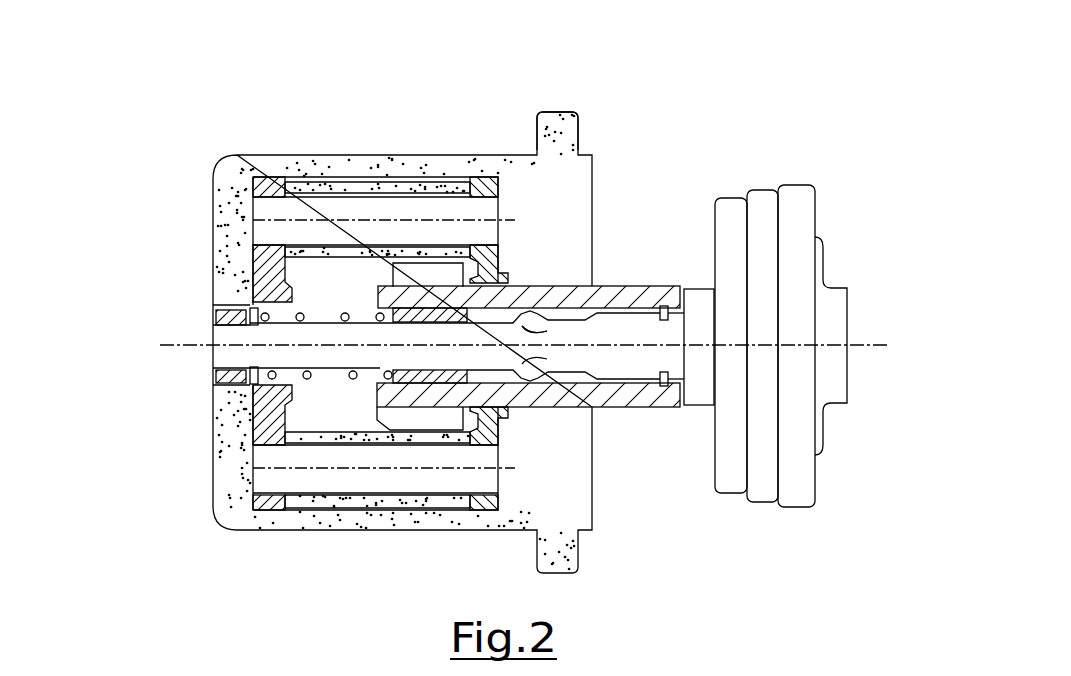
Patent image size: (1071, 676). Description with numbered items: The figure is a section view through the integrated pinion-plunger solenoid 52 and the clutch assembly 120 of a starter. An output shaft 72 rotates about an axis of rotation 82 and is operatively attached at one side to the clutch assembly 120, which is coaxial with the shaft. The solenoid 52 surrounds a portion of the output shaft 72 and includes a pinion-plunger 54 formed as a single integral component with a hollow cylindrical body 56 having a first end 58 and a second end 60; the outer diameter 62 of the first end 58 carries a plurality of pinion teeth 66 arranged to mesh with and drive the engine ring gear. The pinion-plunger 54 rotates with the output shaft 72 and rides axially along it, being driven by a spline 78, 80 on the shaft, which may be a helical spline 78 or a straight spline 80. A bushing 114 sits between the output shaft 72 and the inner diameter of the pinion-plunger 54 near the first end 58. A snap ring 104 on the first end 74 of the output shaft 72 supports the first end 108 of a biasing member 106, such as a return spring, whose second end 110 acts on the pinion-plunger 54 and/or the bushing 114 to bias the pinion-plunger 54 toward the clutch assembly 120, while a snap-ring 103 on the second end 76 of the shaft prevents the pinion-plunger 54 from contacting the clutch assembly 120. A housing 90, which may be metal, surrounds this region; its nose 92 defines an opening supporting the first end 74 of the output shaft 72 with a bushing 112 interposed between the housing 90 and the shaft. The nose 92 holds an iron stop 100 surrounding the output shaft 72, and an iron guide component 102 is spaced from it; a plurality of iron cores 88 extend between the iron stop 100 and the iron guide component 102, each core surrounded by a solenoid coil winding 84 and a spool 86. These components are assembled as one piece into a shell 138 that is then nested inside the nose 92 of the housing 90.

The integrated pinion-plunger solenoid 52 is at (600, 90).
The pinion-plunger 54 is at (582, 293).
The hollow cylindrical body 56 is at (627, 293).
The first end 58 is at (371, 281).
The second end 60 is at (644, 422).
The outer diameter 62 is at (442, 408).
The pinion teeth 66 is at (412, 418).
The output shaft 72 is at (289, 311).
The first end 74 is at (248, 377).
The second end 76 is at (681, 280).
The helical spline 78 is at (548, 331).
The straight spline 80 is at (534, 329).
The axis of rotation 82 is at (873, 345).
The solenoid coil winding 84 is at (340, 183).
The spool 86 is at (290, 183).
The iron cores 88 is at (418, 200).
The housing 90 is at (227, 242).
The nose 92 is at (205, 509).
The iron stop 100 is at (278, 283).
The iron guide component 102 is at (483, 505).
The snap-ring 103 is at (667, 386).
The snap ring 104 is at (250, 380).
The biasing member 106 is at (284, 292).
The first end 108 is at (256, 332).
The second end 110 is at (389, 297).
The bushing 112 is at (206, 370).
The bushing 114 is at (408, 370).
The clutch assembly 120 is at (728, 215).
The shell 138 is at (269, 515).